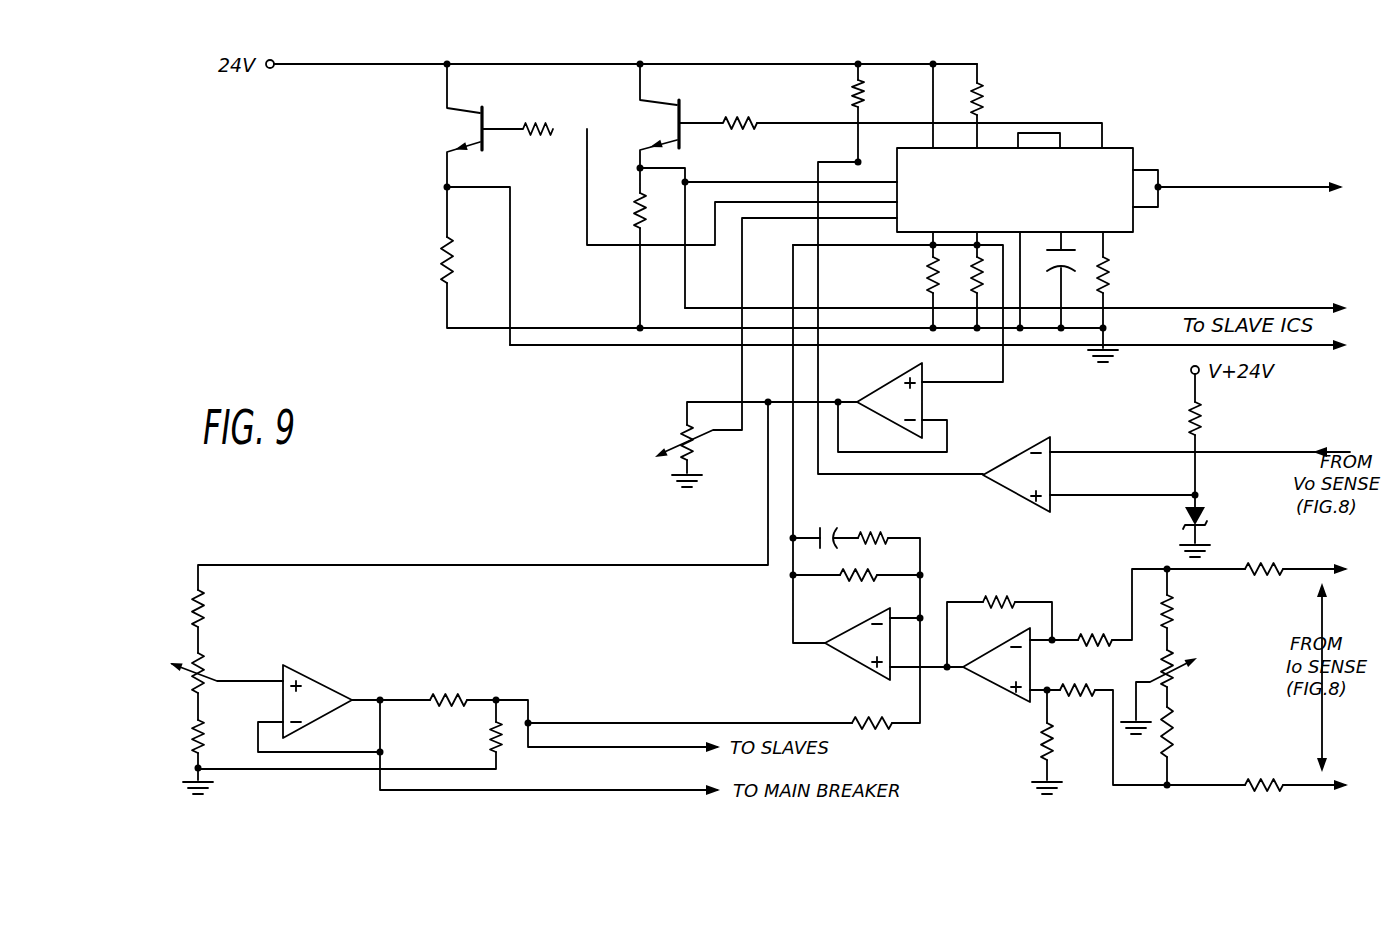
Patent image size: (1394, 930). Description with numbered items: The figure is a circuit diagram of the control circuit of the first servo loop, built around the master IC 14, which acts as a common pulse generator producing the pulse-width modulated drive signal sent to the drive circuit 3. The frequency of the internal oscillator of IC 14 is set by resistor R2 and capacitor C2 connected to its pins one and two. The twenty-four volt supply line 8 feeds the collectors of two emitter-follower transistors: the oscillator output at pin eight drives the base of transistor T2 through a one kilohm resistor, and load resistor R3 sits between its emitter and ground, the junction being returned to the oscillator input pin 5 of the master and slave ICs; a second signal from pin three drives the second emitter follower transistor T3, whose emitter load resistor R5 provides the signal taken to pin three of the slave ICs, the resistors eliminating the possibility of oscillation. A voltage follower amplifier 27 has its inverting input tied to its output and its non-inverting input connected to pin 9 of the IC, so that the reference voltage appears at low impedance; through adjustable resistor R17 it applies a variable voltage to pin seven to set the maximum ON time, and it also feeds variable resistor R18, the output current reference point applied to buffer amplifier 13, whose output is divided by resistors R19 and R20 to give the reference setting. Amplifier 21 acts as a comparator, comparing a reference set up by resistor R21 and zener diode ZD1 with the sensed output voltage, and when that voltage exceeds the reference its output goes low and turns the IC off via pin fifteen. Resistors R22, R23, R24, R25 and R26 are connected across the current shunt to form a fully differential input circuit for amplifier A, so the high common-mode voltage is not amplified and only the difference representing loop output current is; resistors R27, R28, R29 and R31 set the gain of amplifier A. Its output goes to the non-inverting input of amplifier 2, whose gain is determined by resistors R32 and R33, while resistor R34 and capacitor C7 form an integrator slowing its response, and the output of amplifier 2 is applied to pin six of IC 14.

The 24 V supply line 8 is at (347, 70).
The second emitter follower transistor T3 is at (517, 132).
The transistor T2 is at (718, 116).
The resistor R5 is at (464, 260).
The load resistor R3 is at (656, 210).
The master IC 14 is at (1133, 232).
The capacitor C2 is at (1051, 270).
The resistor R2 is at (1119, 275).
The drive circuit 3 is at (1296, 190).
The oscillator input pin 5 is at (1025, 304).
The voltage follower amplifier 27 is at (893, 428).
The adjustable resistor R17 is at (665, 439).
The pin 9 of IC 14 9 is at (790, 478).
The amplifier 21 is at (1013, 494).
The resistor R21 is at (1219, 417).
The zener diode ZD1 is at (1168, 521).
The capacitor C7 is at (825, 522).
The resistor R34 is at (878, 520).
The resistor R32 is at (856, 589).
The amplifier 2 is at (843, 657).
The resistor R33 is at (875, 708).
The amplifier A is at (993, 683).
The resistor R29 is at (1001, 587).
The resistor R27 is at (1094, 625).
The resistor R28 is at (1083, 676).
The resistor R31 is at (1028, 741).
The resistor R24 is at (1191, 611).
The resistor R25 is at (1194, 673).
The resistor R26 is at (1191, 732).
The resistor R22 is at (1266, 584).
The resistor R23 is at (1272, 771).
The variable resistor R18 is at (221, 671).
The buffer amplifier 13 is at (320, 681).
The resistor R19 is at (450, 683).
The resistor R20 is at (473, 737).